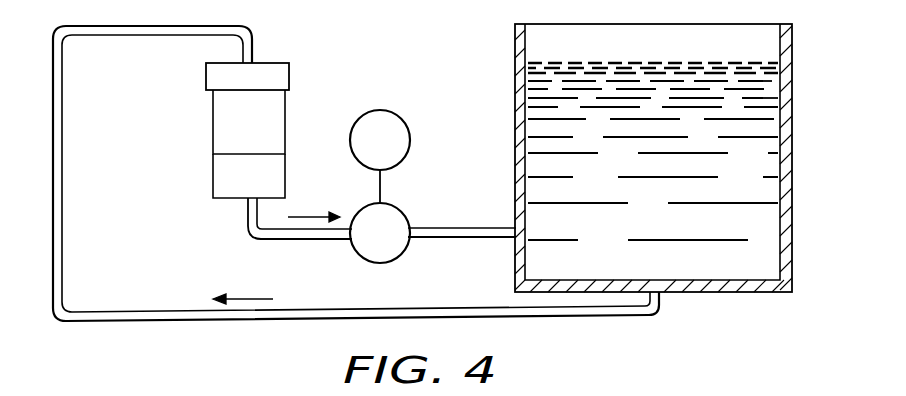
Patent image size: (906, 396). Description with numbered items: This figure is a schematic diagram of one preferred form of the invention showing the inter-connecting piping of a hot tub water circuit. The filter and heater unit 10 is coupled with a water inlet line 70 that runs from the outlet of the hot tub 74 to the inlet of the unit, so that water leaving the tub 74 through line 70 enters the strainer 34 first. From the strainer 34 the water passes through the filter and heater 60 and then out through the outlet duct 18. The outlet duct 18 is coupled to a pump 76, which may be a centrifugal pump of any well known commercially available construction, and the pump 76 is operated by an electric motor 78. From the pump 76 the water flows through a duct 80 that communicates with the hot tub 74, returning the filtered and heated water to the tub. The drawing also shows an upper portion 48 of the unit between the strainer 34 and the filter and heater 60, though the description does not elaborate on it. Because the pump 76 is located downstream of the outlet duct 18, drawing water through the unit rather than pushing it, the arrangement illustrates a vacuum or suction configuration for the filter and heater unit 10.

The filter and heater unit 10 is at (236, 107).
The outlet duct 18 is at (248, 217).
The strainer 34 is at (212, 77).
The upper filter body portion 48 is at (226, 113).
The filter and heater 60 is at (226, 175).
The water inlet line 70 is at (472, 308).
The hot tub 74 is at (528, 76).
The pump 76 is at (392, 213).
The electric motor 78 is at (403, 142).
The duct 80 is at (458, 227).